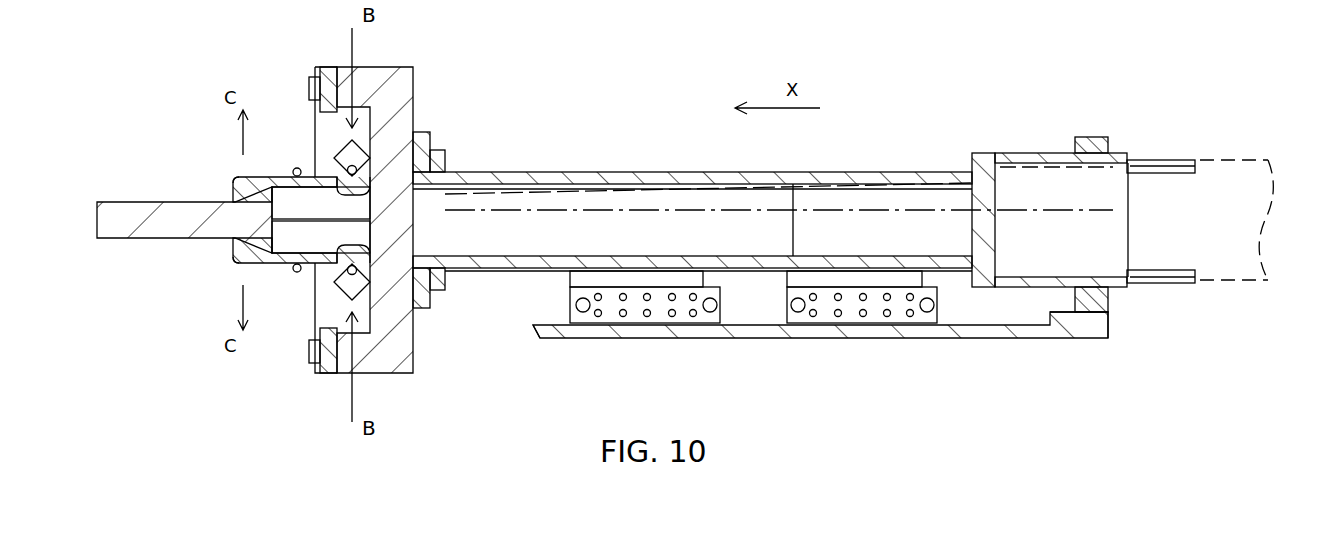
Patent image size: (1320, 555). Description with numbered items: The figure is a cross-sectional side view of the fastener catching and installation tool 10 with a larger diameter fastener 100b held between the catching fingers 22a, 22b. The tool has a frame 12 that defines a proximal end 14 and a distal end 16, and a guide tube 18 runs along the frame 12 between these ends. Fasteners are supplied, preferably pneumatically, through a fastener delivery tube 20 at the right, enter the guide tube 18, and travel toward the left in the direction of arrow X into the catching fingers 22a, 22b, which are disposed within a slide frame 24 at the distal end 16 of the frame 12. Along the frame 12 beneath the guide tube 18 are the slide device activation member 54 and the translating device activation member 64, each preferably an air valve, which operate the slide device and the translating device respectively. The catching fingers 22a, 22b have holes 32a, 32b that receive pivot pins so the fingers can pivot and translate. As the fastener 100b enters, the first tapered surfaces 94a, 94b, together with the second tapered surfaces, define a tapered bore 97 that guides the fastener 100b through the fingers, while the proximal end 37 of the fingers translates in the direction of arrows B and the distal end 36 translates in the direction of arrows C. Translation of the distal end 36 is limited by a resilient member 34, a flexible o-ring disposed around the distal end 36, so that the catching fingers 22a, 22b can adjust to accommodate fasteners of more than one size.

The fastener catching and installation tool 10 is at (962, 84).
The frame 12 is at (806, 352).
The proximal end 14 is at (1108, 338).
The distal end 16 is at (537, 340).
The guide tube 18 is at (621, 171).
The fastener delivery tube 20 is at (1215, 160).
The catching finger 22a is at (236, 177).
The catching finger 22b is at (242, 266).
The slide frame 24 is at (400, 364).
The hole 32a is at (356, 166).
The hole 32b is at (357, 273).
The resilient member 34 is at (296, 168).
The distal end 36 is at (252, 176).
The proximal end 37 is at (362, 156).
The slide device activation member 54 is at (570, 303).
The translating device activation member 64 is at (937, 308).
The first tapered surface 94a is at (360, 194).
The first tapered surface 94b is at (360, 252).
The tapered bore 97 is at (310, 210).
The larger diameter fastener 100b is at (120, 210).